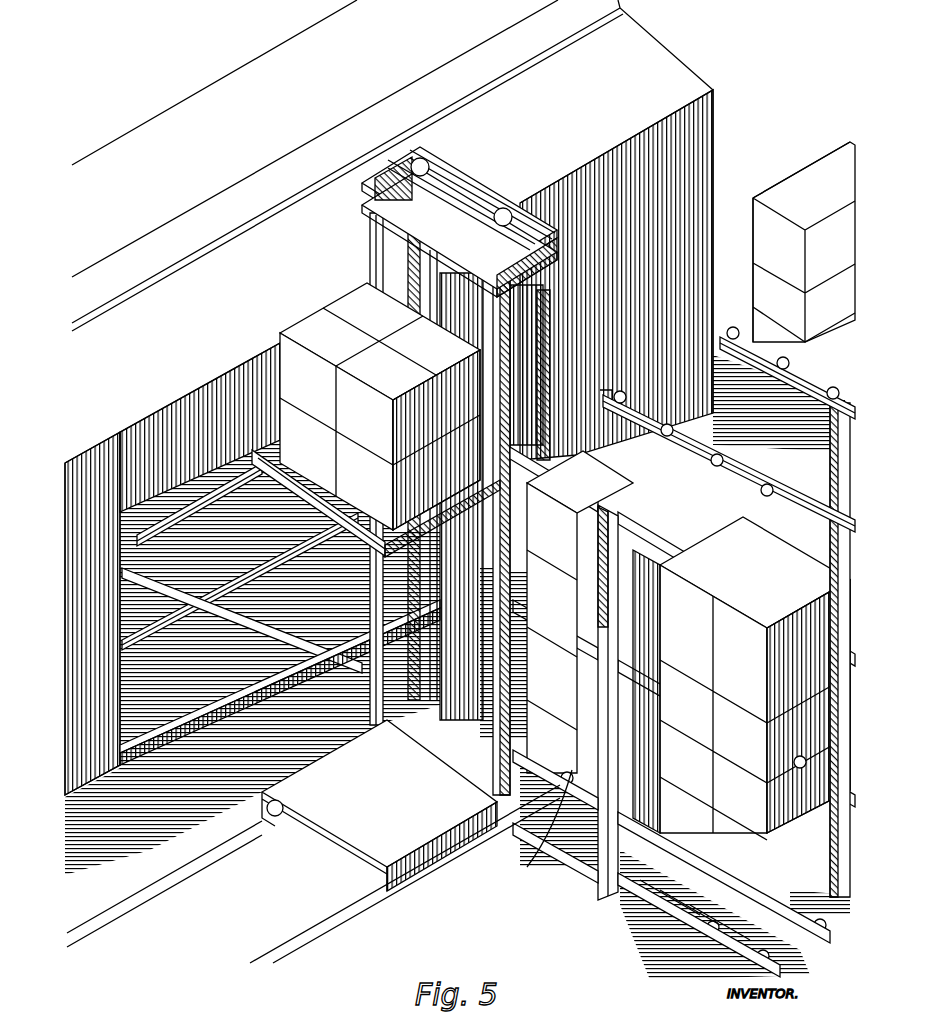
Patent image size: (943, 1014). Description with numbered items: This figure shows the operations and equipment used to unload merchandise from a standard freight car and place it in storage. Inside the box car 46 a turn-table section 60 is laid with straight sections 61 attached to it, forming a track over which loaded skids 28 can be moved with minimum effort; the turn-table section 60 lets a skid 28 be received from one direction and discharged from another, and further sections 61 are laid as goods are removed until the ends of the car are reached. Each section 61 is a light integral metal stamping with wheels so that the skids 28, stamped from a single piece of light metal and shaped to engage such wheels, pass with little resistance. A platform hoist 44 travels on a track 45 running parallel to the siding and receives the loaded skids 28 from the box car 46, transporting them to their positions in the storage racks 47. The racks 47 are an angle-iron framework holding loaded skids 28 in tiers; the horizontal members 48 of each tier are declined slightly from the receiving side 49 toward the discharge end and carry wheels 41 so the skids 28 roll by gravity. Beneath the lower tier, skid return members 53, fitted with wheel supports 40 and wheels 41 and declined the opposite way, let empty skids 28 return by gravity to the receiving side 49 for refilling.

The box car 46 is at (683, 82).
The straight section 61 is at (225, 505).
The turn-table section 60 is at (122, 560).
The skid 28 is at (325, 452).
The wheel 41 is at (365, 515).
The horizontal member 48 is at (740, 590).
The platform hoist 44 is at (373, 840).
The track 45 is at (340, 917).
The receiving side 49 is at (537, 828).
The storage rack 47 is at (603, 897).
The skid return member 53 is at (640, 900).
The wheel support 40 is at (707, 943).